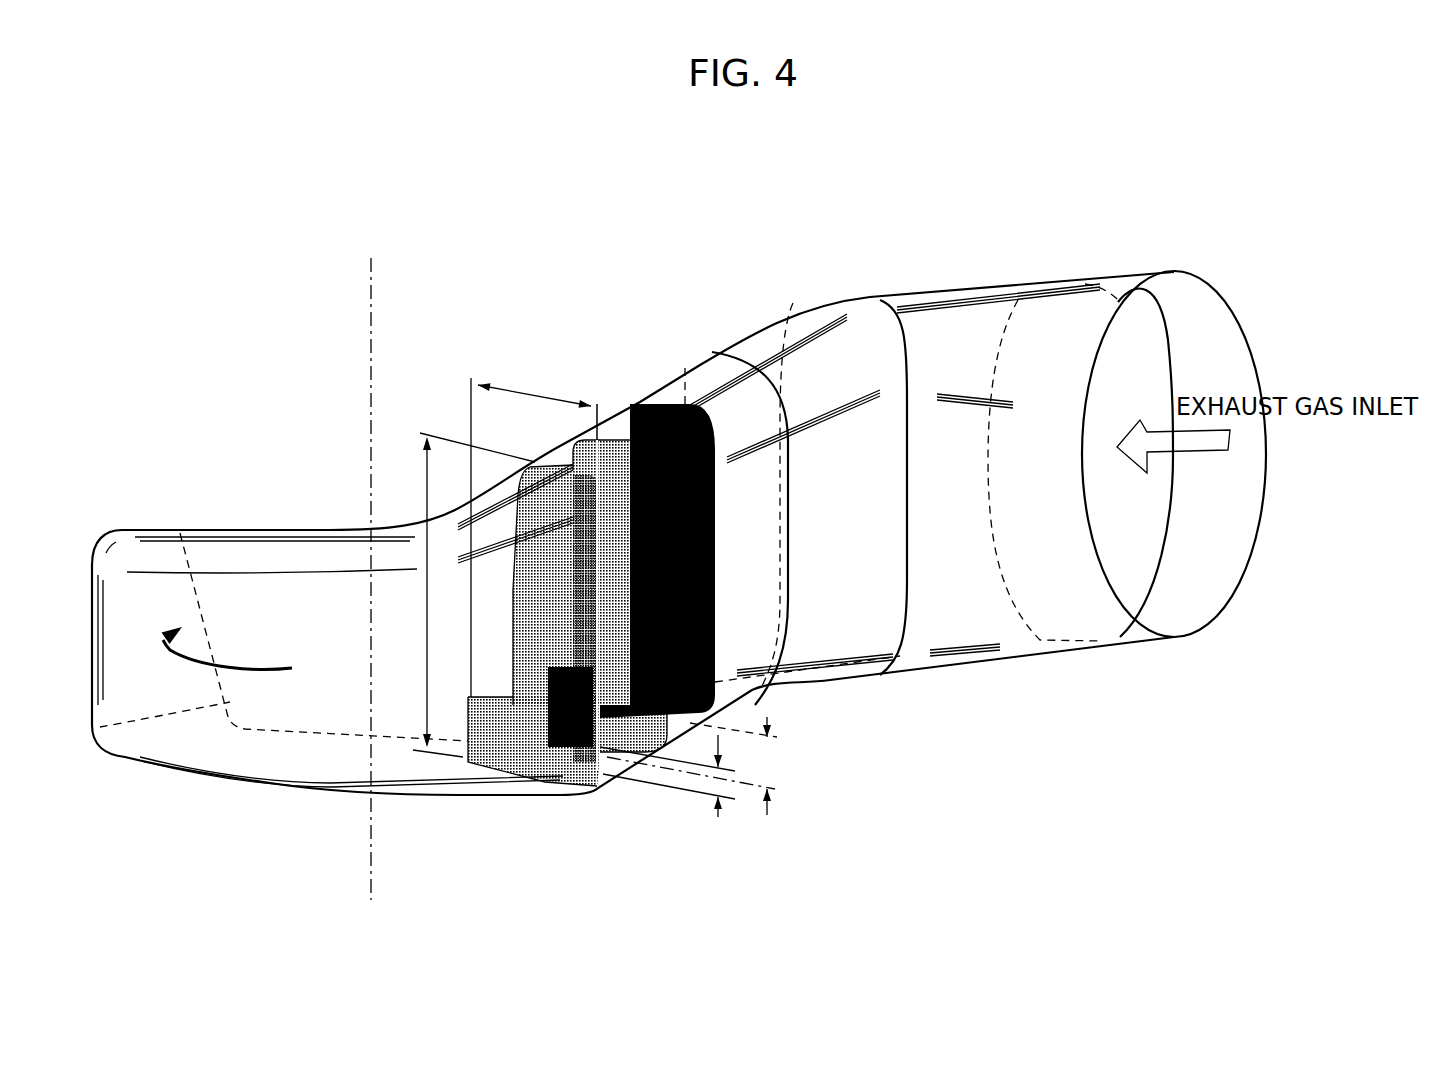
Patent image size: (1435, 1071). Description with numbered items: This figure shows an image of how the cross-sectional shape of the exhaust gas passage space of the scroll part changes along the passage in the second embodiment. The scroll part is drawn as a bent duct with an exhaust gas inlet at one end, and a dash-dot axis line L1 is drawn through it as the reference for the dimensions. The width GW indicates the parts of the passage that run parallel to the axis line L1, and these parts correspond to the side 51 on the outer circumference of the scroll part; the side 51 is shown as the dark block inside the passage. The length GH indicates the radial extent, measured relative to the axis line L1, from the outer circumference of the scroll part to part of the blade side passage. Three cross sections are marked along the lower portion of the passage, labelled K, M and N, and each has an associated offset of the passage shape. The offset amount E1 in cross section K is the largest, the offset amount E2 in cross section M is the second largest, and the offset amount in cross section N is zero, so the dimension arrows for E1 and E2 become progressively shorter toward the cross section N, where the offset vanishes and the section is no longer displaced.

The side 51 is at (715, 608).
The axis line L1 is at (372, 564).
The length in the radial direction GH is at (534, 570).
The width GW is at (457, 595).
The cross section K is at (733, 724).
The cross section M is at (687, 764).
The cross section N is at (660, 792).
The offset amount E1 is at (767, 780).
The offset amount E2 is at (714, 796).